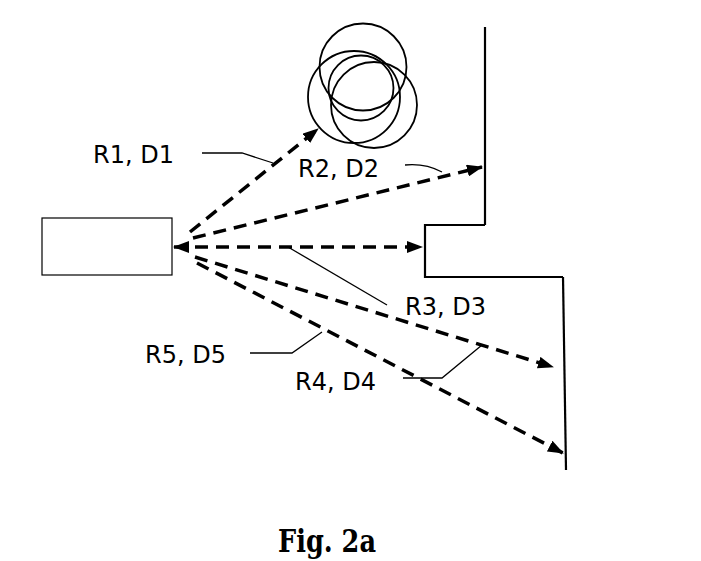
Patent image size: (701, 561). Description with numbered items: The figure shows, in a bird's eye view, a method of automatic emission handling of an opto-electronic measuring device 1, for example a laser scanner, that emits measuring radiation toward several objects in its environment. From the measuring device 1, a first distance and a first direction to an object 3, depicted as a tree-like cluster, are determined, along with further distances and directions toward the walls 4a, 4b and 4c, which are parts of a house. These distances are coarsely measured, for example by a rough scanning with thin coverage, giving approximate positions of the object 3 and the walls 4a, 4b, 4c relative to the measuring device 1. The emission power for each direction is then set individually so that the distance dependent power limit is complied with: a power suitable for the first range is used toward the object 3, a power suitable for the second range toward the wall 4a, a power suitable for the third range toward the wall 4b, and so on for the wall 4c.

The opto-electronic measuring device 1 is at (95, 261).
The object 3 is at (342, 107).
The wall 4a is at (524, 144).
The wall 4b is at (468, 262).
The wall 4c is at (598, 382).